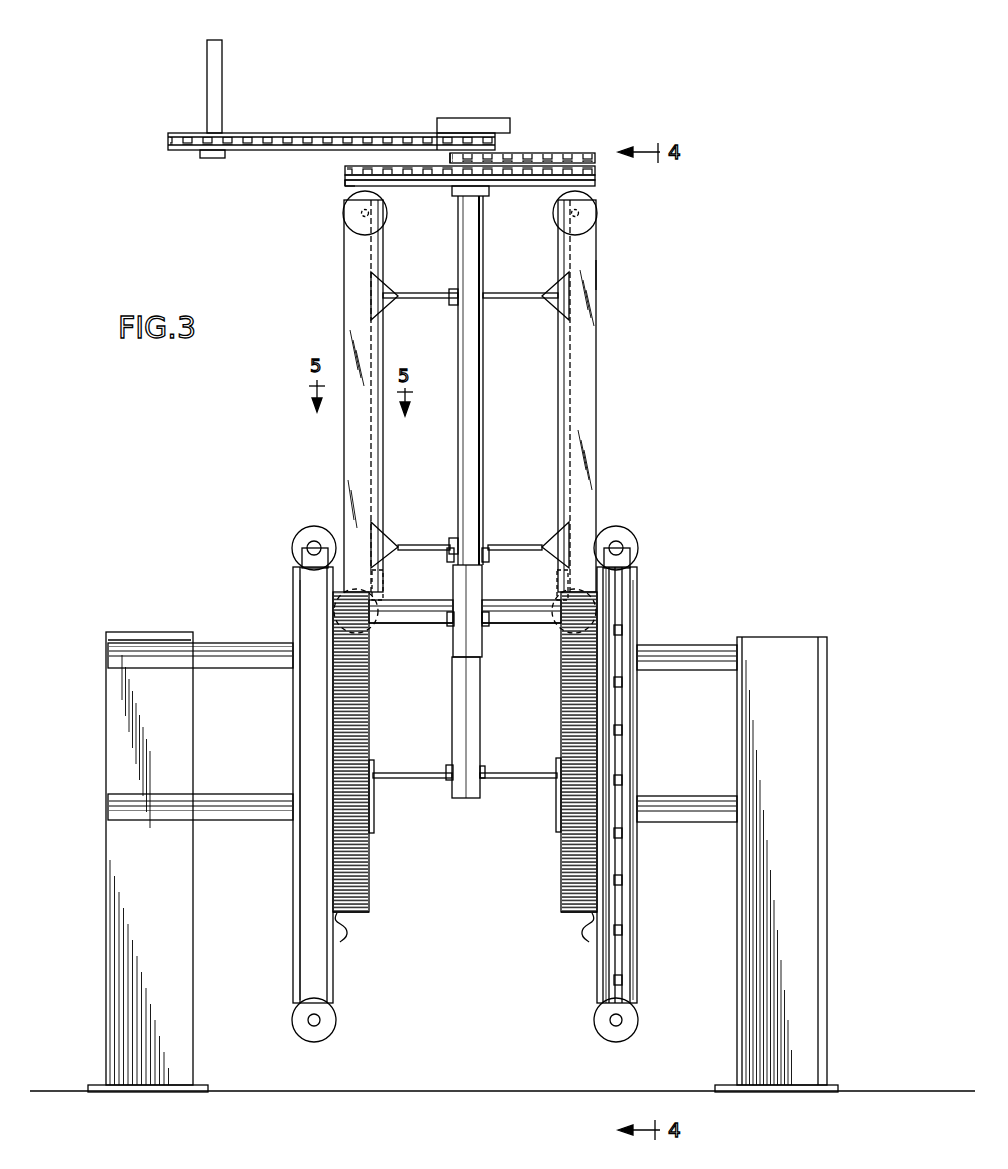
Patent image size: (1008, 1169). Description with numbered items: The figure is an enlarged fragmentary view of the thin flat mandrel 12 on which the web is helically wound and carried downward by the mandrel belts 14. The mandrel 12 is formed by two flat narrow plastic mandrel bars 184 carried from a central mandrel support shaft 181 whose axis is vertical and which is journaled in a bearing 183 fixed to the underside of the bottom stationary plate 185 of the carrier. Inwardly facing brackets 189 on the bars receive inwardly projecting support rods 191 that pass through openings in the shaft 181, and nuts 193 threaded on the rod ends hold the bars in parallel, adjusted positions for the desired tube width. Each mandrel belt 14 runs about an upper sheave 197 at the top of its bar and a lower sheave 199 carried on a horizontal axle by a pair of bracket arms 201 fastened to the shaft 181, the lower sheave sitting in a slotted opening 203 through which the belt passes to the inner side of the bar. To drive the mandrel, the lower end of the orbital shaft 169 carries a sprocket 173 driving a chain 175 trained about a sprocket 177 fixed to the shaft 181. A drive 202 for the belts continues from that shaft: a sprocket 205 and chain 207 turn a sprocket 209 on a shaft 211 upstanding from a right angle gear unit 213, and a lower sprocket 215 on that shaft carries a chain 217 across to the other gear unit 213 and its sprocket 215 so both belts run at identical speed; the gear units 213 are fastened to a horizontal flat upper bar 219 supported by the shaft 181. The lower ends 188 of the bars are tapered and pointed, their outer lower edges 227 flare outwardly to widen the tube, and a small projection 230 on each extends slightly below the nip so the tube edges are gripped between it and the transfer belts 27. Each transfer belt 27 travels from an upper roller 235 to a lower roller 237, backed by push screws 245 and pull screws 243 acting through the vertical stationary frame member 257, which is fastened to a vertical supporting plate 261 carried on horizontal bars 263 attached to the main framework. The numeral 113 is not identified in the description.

The mandrel 12 is at (603, 274).
The mandrel belts 14 is at (343, 284).
The transfer belts 27 is at (293, 706).
The lower shaft section 113 is at (447, 772).
The orbital shaft 169 is at (222, 40).
The sprocket 173 is at (222, 134).
The chain 175 is at (322, 128).
The sprocket 177 is at (488, 155).
The mandrel support shaft 181 is at (478, 130).
The bearing 183 is at (452, 126).
The mandrel bars 184 is at (575, 368).
The bottom stationary plate 185 is at (358, 712).
The lower ends 188 is at (366, 910).
The brackets 189 is at (392, 292).
The support rods 191 is at (428, 300).
The nuts 193 is at (458, 284).
The upper sheave 197 is at (388, 214).
The lower sheave 199 is at (378, 636).
The bracket arms 201 is at (428, 614).
The drive 202 is at (326, 190).
The slotted opening 203 is at (386, 590).
The sprocket 205 is at (447, 157).
The chain 207 is at (565, 153).
The sprocket 209 is at (597, 162).
The shaft 211 is at (511, 244).
The right angle gear units 213 is at (368, 203).
The lower sprocket 215 is at (343, 172).
The chain 217 is at (489, 192).
The upper bar 219 is at (345, 184).
The edges 227 is at (293, 574).
The projection 230 is at (346, 926).
The upper roller 235 is at (312, 536).
The lower roller 237 is at (312, 1032).
The pull screws 243 is at (622, 772).
The push screws 245 is at (622, 832).
The stationary frame member 257 is at (608, 742).
The vertical supporting plate 261 is at (300, 850).
The horizontal bars 263 is at (252, 645).